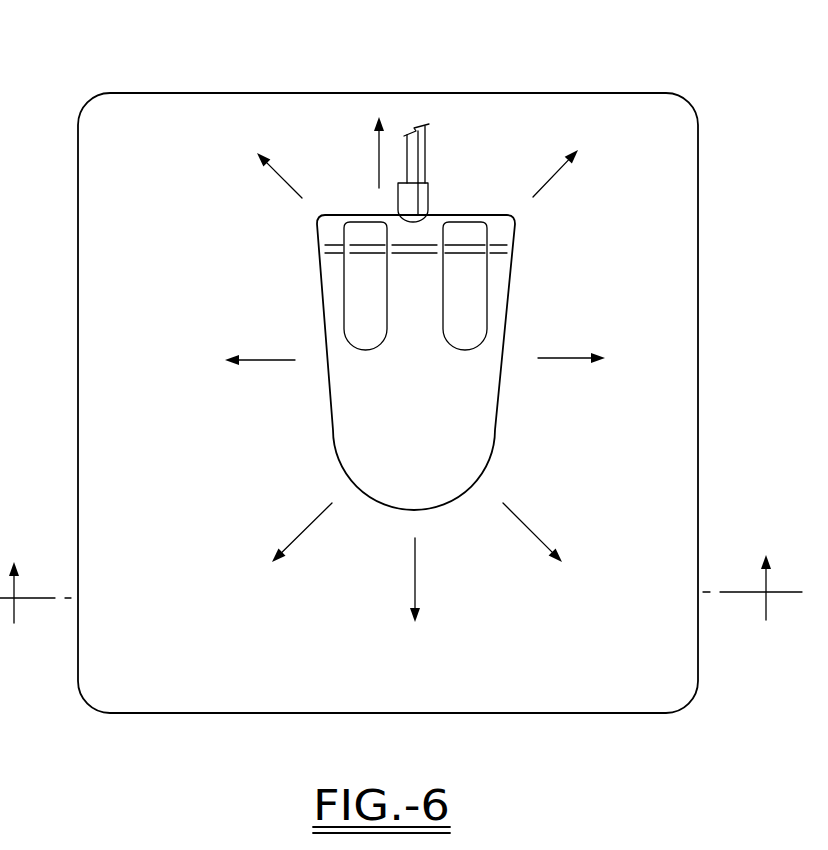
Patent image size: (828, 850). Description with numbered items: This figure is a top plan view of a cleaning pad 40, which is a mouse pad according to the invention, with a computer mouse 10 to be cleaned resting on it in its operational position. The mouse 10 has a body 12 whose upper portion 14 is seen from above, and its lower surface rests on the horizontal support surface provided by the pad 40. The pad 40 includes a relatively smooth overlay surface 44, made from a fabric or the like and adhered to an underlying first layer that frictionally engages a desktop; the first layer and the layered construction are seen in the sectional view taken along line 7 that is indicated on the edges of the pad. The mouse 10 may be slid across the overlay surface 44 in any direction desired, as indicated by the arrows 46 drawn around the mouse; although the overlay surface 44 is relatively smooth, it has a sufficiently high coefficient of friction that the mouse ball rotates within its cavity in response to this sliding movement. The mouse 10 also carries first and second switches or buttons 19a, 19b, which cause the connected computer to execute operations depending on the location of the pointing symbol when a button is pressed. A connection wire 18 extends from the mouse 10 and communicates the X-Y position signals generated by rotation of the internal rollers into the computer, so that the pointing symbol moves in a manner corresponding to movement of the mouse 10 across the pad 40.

The computer mouse 10 is at (391, 316).
The body 12 is at (508, 437).
The upper portion 14 is at (431, 414).
The connection wire 18 is at (427, 157).
The first switch or button 19a is at (477, 290).
The second switch or button 19b is at (355, 297).
The cleaning pad 40 is at (292, 82).
The overlay surface 44 is at (547, 112).
The arrows 46 is at (378, 143).
The section line 7- 7 is at (401, 607).